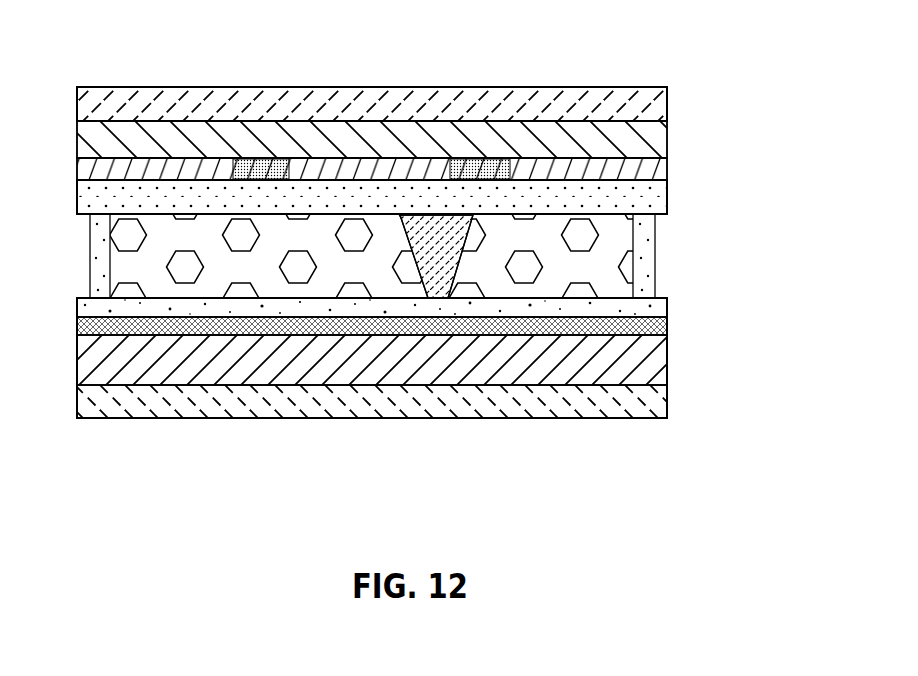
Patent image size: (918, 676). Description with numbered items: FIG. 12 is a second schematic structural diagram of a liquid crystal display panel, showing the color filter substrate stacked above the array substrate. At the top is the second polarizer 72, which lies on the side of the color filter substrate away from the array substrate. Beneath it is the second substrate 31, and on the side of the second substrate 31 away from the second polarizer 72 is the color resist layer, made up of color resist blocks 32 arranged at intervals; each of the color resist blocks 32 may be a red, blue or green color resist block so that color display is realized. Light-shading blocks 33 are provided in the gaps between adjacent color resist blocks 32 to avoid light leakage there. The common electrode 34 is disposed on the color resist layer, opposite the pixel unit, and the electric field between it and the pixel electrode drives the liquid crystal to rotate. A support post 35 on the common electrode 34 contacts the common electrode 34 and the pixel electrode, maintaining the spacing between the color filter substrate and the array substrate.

The second polarizer 72 is at (643, 102).
The second substrate 31 is at (643, 146).
The color resist blocks 32 is at (643, 172).
The light-shading blocks 33 is at (482, 170).
The common electrode 34 is at (643, 206).
The support post 35 is at (452, 270).